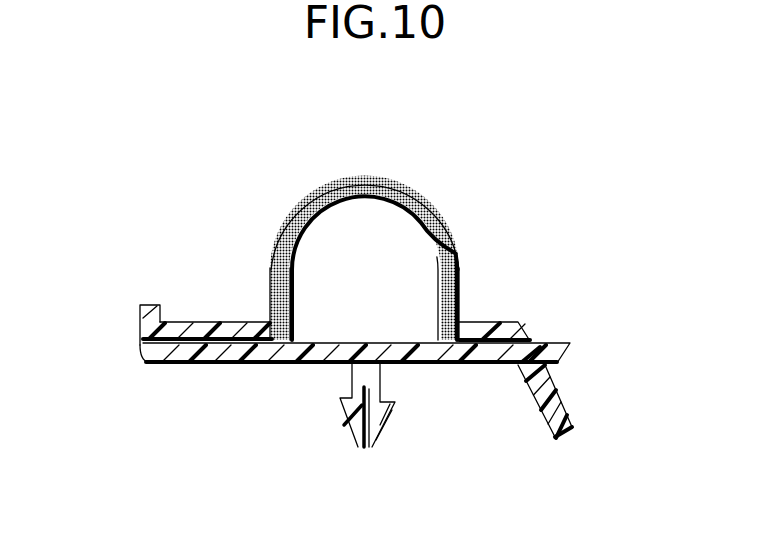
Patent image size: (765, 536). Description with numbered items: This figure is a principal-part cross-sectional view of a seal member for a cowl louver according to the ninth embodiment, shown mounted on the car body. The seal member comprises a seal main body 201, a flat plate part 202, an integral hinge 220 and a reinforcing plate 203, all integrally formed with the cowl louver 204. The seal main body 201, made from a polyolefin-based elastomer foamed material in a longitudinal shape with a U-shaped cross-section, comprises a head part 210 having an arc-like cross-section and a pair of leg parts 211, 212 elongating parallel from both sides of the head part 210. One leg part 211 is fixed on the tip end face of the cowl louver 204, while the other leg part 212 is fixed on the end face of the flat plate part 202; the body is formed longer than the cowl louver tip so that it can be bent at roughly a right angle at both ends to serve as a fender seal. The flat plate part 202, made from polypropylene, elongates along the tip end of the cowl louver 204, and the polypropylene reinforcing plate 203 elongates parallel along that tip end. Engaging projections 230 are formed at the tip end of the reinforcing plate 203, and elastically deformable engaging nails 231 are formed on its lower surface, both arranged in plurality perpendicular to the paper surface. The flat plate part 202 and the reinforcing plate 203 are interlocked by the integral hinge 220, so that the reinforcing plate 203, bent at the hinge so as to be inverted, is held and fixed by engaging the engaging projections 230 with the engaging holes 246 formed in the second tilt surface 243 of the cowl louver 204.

The seal main body 201 is at (437, 205).
The head part 210 is at (314, 190).
The leg part 211 is at (461, 260).
The leg part 212 is at (275, 238).
The flat plate part 202 is at (183, 322).
The reinforcing plate 203 is at (225, 364).
The integral hinge 220 is at (140, 352).
The engaging holes 246 is at (523, 340).
The engaging nails 231 is at (387, 432).
The cowl louver 204 is at (556, 405).
The engaging projections 230 is at (548, 358).
The second tilt surface 243 is at (570, 410).